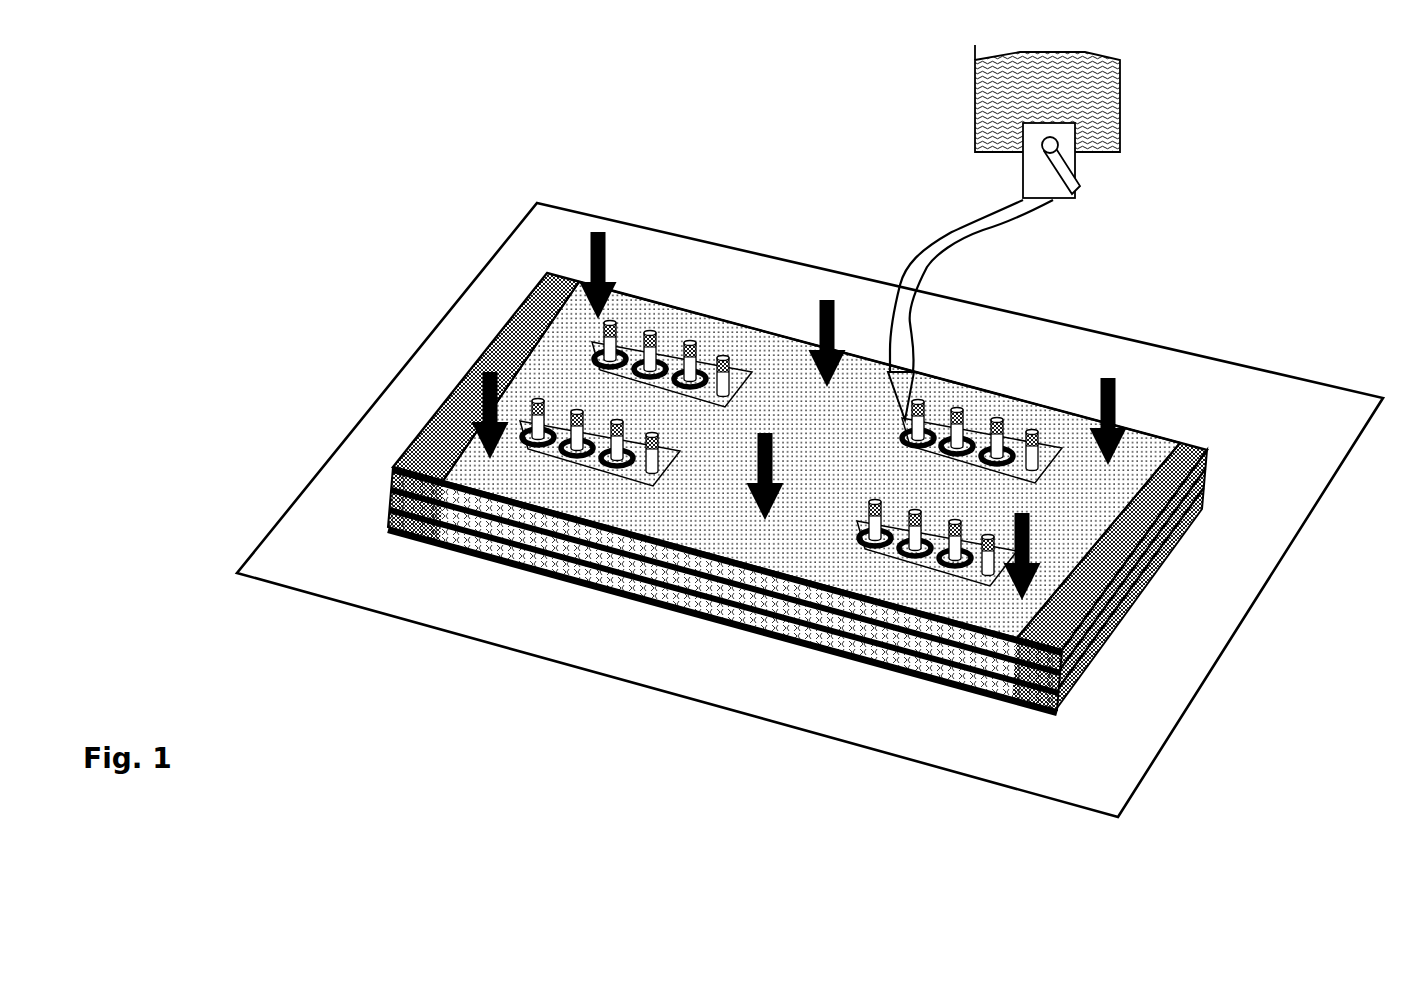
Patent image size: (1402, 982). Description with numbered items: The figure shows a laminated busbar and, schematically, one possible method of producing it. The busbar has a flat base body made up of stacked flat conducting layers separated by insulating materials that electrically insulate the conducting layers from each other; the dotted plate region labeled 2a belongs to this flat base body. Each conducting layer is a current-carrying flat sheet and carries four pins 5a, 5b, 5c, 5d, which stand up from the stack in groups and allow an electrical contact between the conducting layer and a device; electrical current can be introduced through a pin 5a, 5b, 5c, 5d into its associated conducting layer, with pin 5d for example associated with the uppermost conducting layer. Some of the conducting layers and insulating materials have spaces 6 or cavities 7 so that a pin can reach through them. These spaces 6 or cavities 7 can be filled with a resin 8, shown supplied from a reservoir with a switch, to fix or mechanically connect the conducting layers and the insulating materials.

The carrier plate 2a is at (777, 537).
The pin 5a is at (534, 452).
The pin 5b is at (580, 432).
The pin 5c is at (618, 452).
The pin 5d is at (653, 458).
The space 6 is at (605, 343).
The cavity 7 is at (672, 350).
The resin 8 is at (1008, 105).